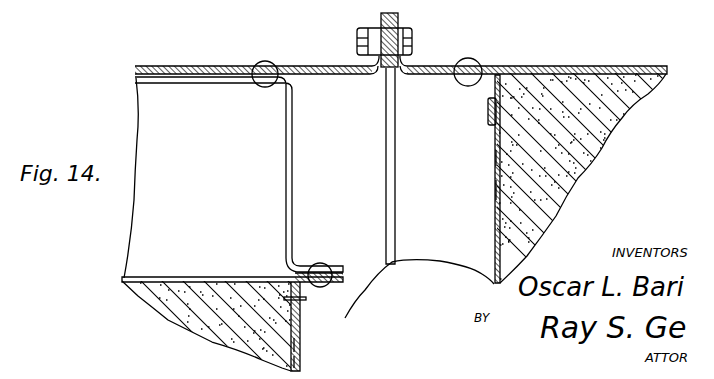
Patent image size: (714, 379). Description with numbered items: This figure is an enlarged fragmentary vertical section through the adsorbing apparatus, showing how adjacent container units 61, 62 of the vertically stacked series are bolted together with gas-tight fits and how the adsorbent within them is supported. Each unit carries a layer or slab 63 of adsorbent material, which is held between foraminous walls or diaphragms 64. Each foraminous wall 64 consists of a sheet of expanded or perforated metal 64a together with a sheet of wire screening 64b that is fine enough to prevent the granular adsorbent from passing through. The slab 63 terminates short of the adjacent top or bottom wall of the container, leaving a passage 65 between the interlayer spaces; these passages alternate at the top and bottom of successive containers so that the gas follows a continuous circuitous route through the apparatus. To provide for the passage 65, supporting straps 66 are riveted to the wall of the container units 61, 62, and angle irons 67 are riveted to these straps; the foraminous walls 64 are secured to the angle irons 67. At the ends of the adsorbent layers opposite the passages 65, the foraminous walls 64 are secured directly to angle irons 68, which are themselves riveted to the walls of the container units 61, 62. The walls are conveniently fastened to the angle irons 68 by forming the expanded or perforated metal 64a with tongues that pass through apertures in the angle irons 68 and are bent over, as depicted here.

The container unit 61 is at (535, 66).
The container unit 62 is at (218, 66).
The layer or slab of adsorbent material 63 is at (387, 216).
The foraminous wall 64 is at (496, 216).
The sheet of expanded or perforated metal 64a is at (296, 346).
The sheet of wire screening 64b is at (294, 362).
The passage 65 is at (150, 178).
The supporting strap 66 is at (293, 190).
The angle iron 67 is at (305, 301).
The angle iron 68 is at (484, 80).